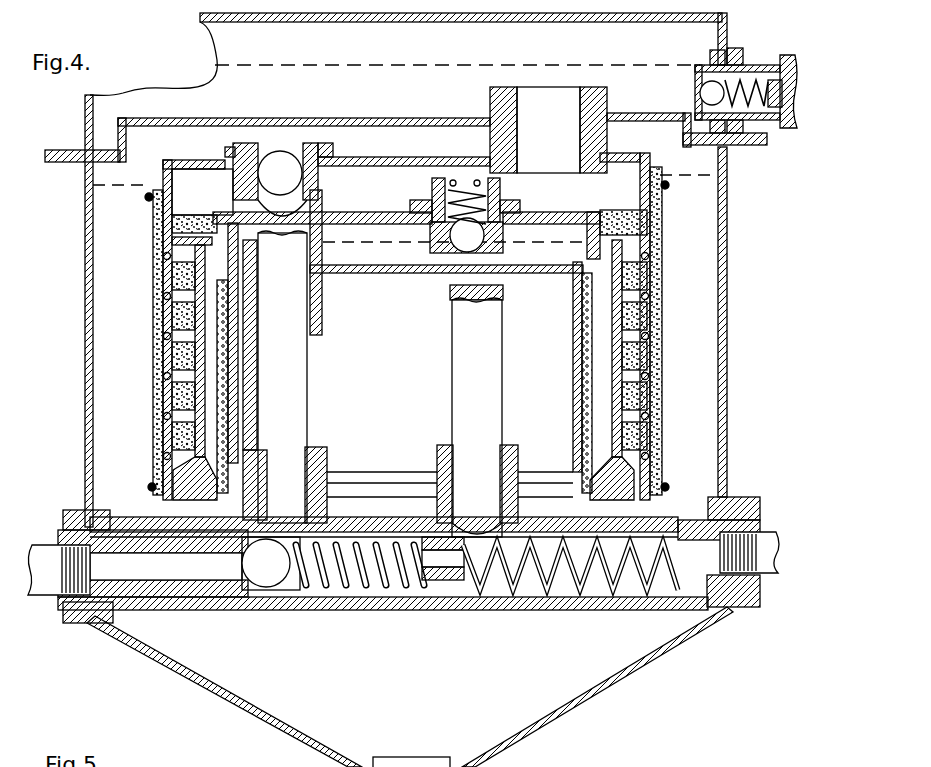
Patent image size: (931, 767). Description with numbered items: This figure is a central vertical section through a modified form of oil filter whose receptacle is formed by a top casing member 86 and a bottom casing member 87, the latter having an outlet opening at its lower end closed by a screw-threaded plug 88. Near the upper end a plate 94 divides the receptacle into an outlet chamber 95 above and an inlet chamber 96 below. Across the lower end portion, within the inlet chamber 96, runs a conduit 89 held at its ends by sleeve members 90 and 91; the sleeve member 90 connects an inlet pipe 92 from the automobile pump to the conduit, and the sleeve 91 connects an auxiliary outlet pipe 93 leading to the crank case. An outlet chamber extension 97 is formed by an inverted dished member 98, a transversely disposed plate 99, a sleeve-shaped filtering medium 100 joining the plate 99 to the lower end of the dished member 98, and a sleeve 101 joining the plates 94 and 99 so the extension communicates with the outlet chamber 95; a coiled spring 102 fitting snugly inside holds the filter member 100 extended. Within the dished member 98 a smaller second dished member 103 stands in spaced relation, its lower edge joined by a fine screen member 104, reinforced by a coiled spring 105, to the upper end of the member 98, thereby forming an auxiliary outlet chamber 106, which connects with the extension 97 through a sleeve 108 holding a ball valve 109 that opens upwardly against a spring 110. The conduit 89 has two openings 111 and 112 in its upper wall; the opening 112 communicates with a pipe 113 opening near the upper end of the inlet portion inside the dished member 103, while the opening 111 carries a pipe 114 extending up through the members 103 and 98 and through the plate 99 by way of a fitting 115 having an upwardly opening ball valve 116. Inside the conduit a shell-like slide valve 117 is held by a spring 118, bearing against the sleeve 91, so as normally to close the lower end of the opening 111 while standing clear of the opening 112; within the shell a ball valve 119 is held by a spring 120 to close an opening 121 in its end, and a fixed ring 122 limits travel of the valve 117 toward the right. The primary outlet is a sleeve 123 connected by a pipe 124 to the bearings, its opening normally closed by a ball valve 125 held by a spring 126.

The top casing member 86 is at (723, 27).
The bottom casing member 87 is at (727, 322).
The screw-threaded plug 88 is at (398, 765).
The conduit 89 is at (367, 602).
The sleeve member 90 is at (153, 592).
The sleeve member 91 is at (698, 530).
The inlet pipe 92 is at (33, 577).
The auxiliary outlet pipe 93 is at (773, 570).
The plate 94 is at (255, 117).
The outlet chamber 95 is at (216, 44).
The inlet chamber 96 is at (705, 242).
The outlet chamber extension 97 is at (383, 187).
The inverted dished member 98 is at (618, 357).
The transversely disposed plate 99 is at (200, 167).
The filtering medium 100 is at (157, 315).
The sleeve 101 is at (590, 132).
The coiled spring 102 is at (178, 338).
The second dished member 103 is at (578, 327).
The fine screen member 104 is at (213, 465).
The coiled spring 105 is at (580, 423).
The auxiliary outlet chamber 106 is at (348, 258).
The sleeve 108 is at (500, 230).
The ball valve 109 is at (427, 238).
The spring 110 is at (463, 200).
The opening 111 is at (300, 500).
The opening 112 is at (473, 498).
The pipe 113 is at (465, 362).
The pipe 114 is at (302, 366).
The fitting 115 is at (233, 195).
The ball valve 116 is at (290, 160).
The slide valve 117 is at (293, 593).
The spring 118 is at (573, 570).
The ball valve 119 is at (267, 580).
The spring 120 is at (357, 572).
The opening 121 is at (242, 553).
The ring 122 is at (530, 580).
The sleeve 123 is at (700, 70).
The pipe 124 is at (782, 128).
The ball valve 125 is at (707, 95).
The spring 126 is at (753, 53).